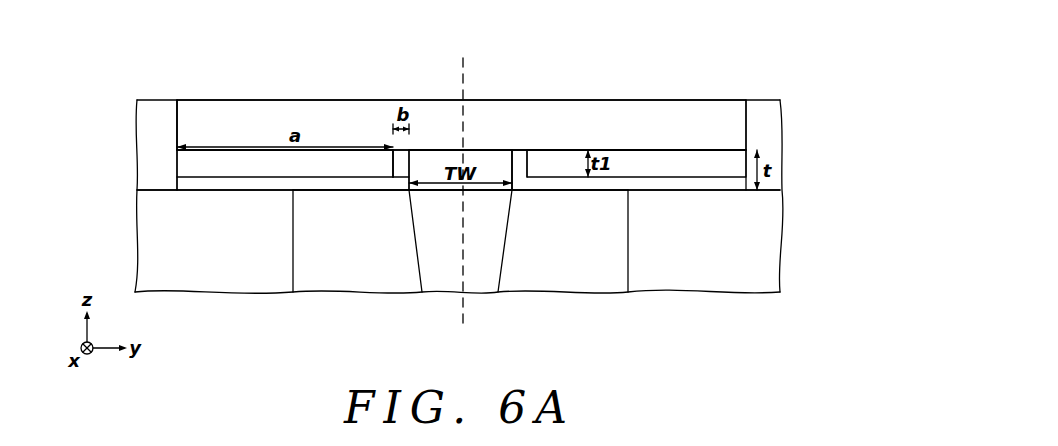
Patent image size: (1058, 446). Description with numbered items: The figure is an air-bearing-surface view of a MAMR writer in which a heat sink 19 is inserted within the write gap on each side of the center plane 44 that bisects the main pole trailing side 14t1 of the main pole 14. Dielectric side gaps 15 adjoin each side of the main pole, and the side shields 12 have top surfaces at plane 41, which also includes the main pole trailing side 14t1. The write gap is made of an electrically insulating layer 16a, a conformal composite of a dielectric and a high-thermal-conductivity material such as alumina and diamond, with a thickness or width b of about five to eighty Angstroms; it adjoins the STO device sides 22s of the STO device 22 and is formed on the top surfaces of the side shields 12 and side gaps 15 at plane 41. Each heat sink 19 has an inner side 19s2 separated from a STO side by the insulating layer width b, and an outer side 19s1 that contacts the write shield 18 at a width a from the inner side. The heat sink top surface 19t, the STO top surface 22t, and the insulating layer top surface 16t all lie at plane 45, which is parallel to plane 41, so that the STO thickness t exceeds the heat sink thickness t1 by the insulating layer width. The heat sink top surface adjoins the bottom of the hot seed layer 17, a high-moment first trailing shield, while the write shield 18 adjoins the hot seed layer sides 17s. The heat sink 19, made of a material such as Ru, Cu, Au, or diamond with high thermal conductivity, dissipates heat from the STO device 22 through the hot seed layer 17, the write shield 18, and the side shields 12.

The side shields 12 is at (147, 257).
The main pole 14 is at (437, 277).
The main pole trailing side 14t1 is at (490, 186).
The side gaps 15 is at (375, 277).
The insulating layer 16a is at (522, 167).
The insulating layer top surface 16t is at (522, 150).
The first trailing shield 17 is at (238, 107).
The hot seed layer sides 17s is at (177, 112).
The second trailing shield 18 is at (147, 121).
The heat sink 19 is at (203, 168).
The heat sink outer side 19s1 is at (177, 165).
The heat sink inner side 19s2 is at (390, 163).
The heat sink top surface 19t is at (638, 148).
The STO device 22 is at (490, 165).
The STO top surface 22t is at (438, 148).
The STO device sides 22s is at (513, 175).
The plane 41- 41 is at (130, 190).
The center plane 44 is at (462, 195).
The plane 45- 45 is at (130, 150).